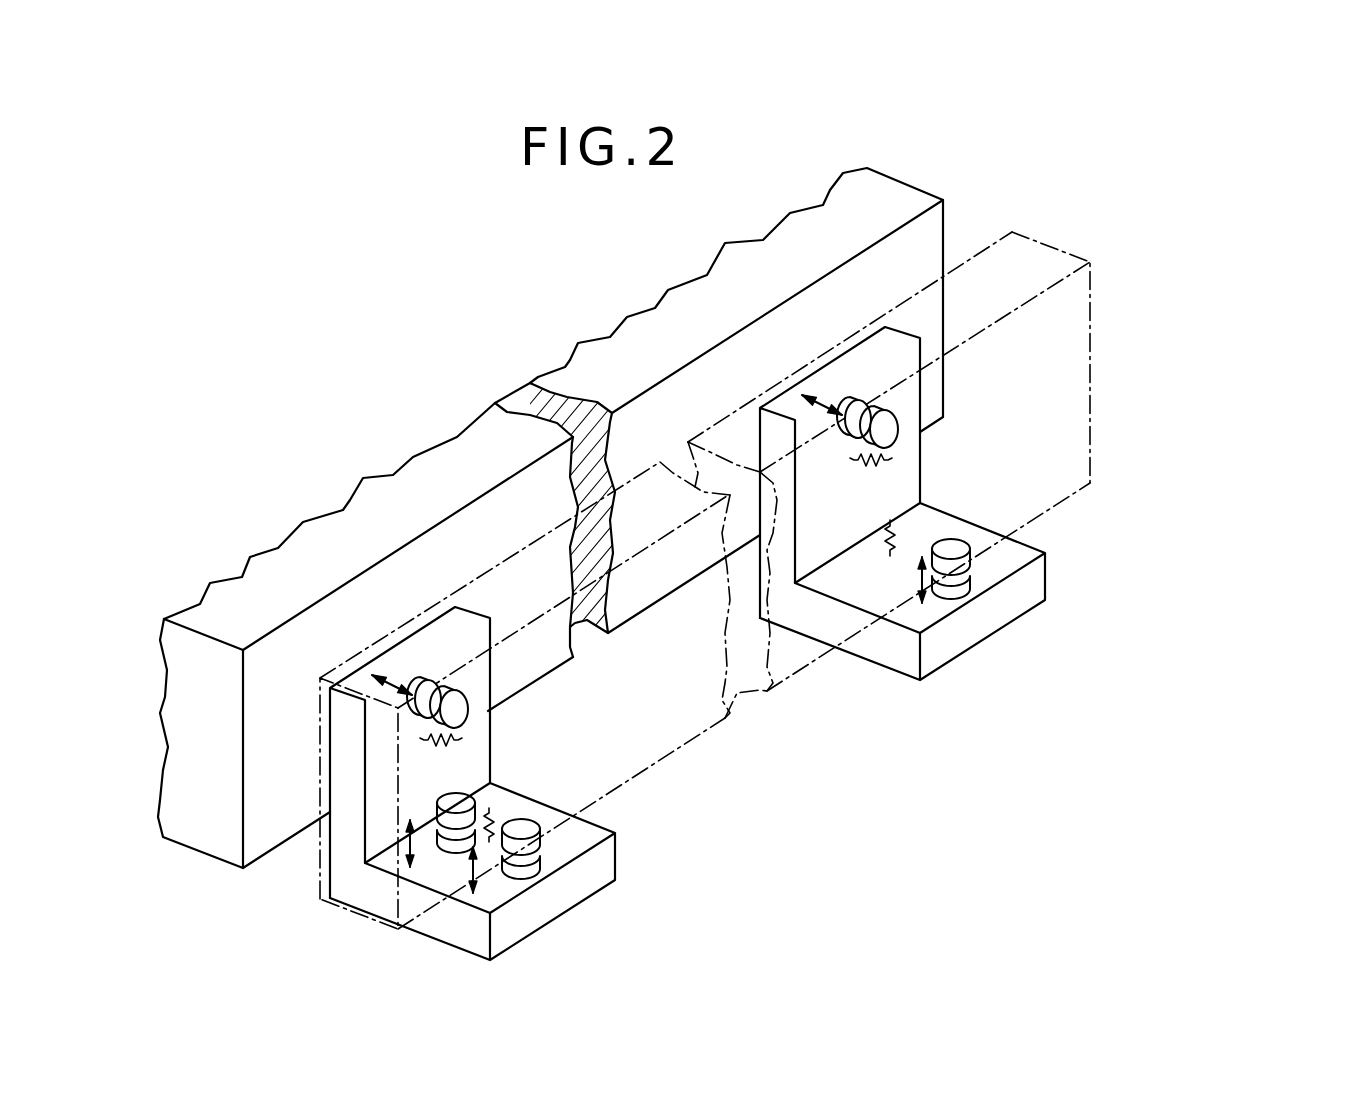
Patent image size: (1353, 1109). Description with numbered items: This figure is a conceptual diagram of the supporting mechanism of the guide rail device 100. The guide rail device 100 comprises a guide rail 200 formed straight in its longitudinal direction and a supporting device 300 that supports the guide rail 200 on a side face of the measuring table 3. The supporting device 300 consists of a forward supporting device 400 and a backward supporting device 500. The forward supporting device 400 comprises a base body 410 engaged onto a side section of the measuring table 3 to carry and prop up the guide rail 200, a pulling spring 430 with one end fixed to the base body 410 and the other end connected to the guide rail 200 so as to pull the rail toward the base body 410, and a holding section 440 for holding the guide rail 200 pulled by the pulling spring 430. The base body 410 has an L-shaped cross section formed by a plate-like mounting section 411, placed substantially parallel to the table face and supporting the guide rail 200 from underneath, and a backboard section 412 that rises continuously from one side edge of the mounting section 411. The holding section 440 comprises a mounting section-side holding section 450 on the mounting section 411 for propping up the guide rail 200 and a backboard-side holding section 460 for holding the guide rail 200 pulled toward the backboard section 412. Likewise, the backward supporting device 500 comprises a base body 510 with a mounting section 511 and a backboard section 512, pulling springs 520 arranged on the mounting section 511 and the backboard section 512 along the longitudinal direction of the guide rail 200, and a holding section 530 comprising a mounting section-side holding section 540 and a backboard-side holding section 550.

The measuring table 3 is at (902, 198).
The guide rail device 100 is at (1020, 208).
The guide rail 200 is at (1070, 308).
The supporting device 300 is at (1027, 755).
The forward supporting device 400 is at (605, 908).
The base body 410 is at (203, 895).
The mounting section 411 is at (457, 925).
The backboard section 412 is at (347, 837).
The pulling spring 430 is at (490, 818).
The holding section 440 is at (763, 748).
The mounting section-side holding section 450 is at (560, 839).
The backboard-side holding section 460 is at (480, 696).
The backward supporting device 500 is at (980, 660).
The base body 510 is at (1182, 483).
The mounting section 511 is at (1005, 572).
The backboard section 512 is at (910, 467).
The pulling spring 520 is at (883, 538).
The holding section 530 is at (1177, 363).
The mounting section-side holding section 540 is at (980, 565).
The backboard-side holding section 550 is at (905, 420).